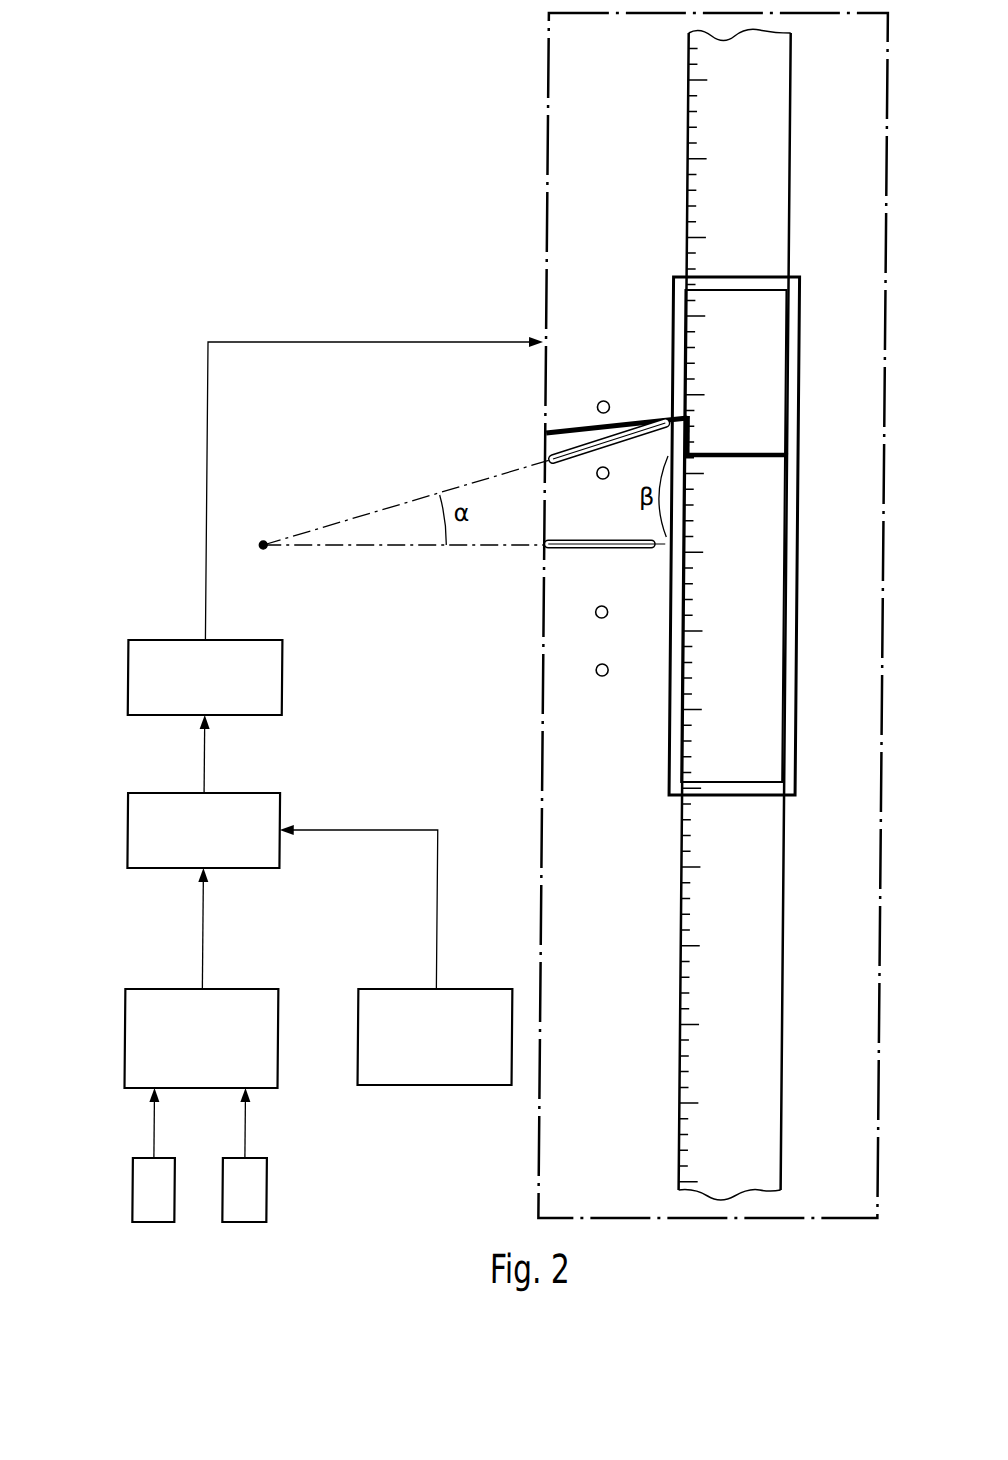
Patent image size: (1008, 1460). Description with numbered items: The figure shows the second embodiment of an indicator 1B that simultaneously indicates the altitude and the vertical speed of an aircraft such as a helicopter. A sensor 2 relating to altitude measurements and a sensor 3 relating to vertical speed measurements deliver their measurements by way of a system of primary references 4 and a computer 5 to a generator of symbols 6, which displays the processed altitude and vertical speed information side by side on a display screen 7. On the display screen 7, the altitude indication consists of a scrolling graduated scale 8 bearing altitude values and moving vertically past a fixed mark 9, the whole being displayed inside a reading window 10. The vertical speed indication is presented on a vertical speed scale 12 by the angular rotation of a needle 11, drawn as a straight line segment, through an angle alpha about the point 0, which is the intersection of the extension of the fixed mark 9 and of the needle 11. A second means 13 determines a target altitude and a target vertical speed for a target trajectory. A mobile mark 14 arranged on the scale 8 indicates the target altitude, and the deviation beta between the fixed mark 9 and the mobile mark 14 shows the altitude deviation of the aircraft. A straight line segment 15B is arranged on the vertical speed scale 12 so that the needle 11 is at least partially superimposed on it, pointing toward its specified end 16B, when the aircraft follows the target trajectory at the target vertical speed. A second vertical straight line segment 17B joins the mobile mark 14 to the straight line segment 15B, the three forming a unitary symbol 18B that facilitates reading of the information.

The indicator 1B is at (441, 272).
The point O 0 is at (271, 541).
The sensor relating to altitude measurements 2 is at (169, 1213).
The sensor relating to measurements of vertical speed 3 is at (258, 1213).
The system of primary references 4 is at (281, 1068).
The computer 5 is at (280, 850).
The generator of symbols 6 is at (279, 672).
The display screen 7 is at (547, 200).
The scrolling graduated scale 8 is at (758, 185).
The fixed mark 9 is at (580, 560).
The reading window 10 is at (803, 608).
The needle 11 is at (579, 460).
The vertical speed scale 12 is at (600, 707).
The second means for determining a target altitude and a target vertical speed 13 is at (449, 1085).
The mobile mark 14 is at (747, 458).
The straight line segment 15B is at (567, 428).
The specified end 16B is at (676, 400).
The second vertical straight line segment 17B is at (701, 428).
The symbol 18B is at (738, 412).